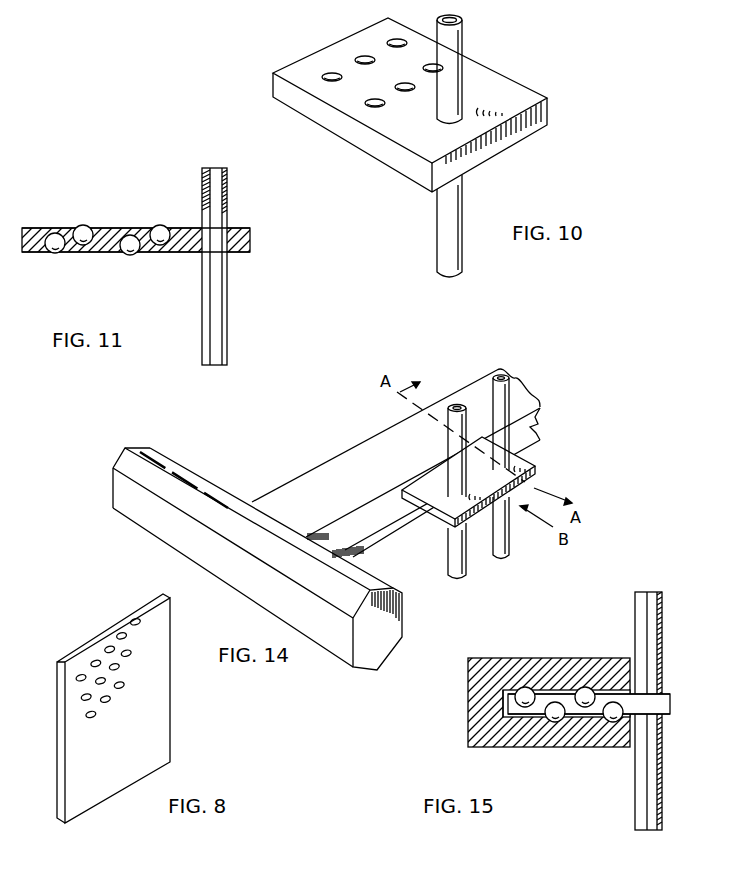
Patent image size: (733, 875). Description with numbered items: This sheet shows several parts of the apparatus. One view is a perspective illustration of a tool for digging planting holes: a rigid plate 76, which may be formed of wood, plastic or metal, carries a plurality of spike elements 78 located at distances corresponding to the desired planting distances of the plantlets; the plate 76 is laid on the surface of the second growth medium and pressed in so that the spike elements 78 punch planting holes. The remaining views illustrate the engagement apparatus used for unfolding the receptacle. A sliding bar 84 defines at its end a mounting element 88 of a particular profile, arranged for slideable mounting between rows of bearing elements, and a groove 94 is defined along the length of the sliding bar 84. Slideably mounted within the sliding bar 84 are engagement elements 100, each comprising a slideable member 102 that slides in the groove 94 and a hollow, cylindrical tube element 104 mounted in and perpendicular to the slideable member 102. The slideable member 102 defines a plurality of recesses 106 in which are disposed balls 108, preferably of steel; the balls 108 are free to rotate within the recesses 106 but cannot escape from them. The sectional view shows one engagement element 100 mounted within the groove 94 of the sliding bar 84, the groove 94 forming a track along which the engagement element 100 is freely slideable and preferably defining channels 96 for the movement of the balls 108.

In FIG. 8, the rigid plate 76 is at (130, 622).
In FIG. 8, the spike elements 78 is at (110, 650).
In FIG. 14, the sliding bar 84 is at (327, 483).
In FIG. 15, the sliding bar 84 is at (488, 678).
In FIG. 14, the mounting element 88 is at (160, 517).
In FIG. 14, the groove 94 is at (525, 427).
In FIG. 15, the groove 94 is at (507, 703).
In FIG. 15, the channels 96 is at (547, 690).
In FIG. 10, the engagement element 100 is at (526, 106).
In FIG. 11, the engagement element 100 is at (250, 228).
In FIG. 14, the engagement element 100 is at (528, 457).
In FIG. 15, the engagement element 100 is at (664, 700).
In FIG. 10, the slideable member 102 is at (392, 162).
In FIG. 11, the slideable member 102 is at (250, 248).
In FIG. 15, the slideable member 102 is at (663, 747).
In FIG. 10, the tube element 104 is at (462, 37).
In FIG. 11, the tube element 104 is at (227, 298).
In FIG. 15, the tube element 104 is at (642, 797).
In FIG. 10, the recesses 106 is at (372, 102).
In FIG. 11, the recesses 106 is at (130, 258).
In FIG. 15, the recesses 106 is at (613, 693).
In FIG. 11, the balls 108 is at (55, 256).
In FIG. 15, the balls 108 is at (553, 718).